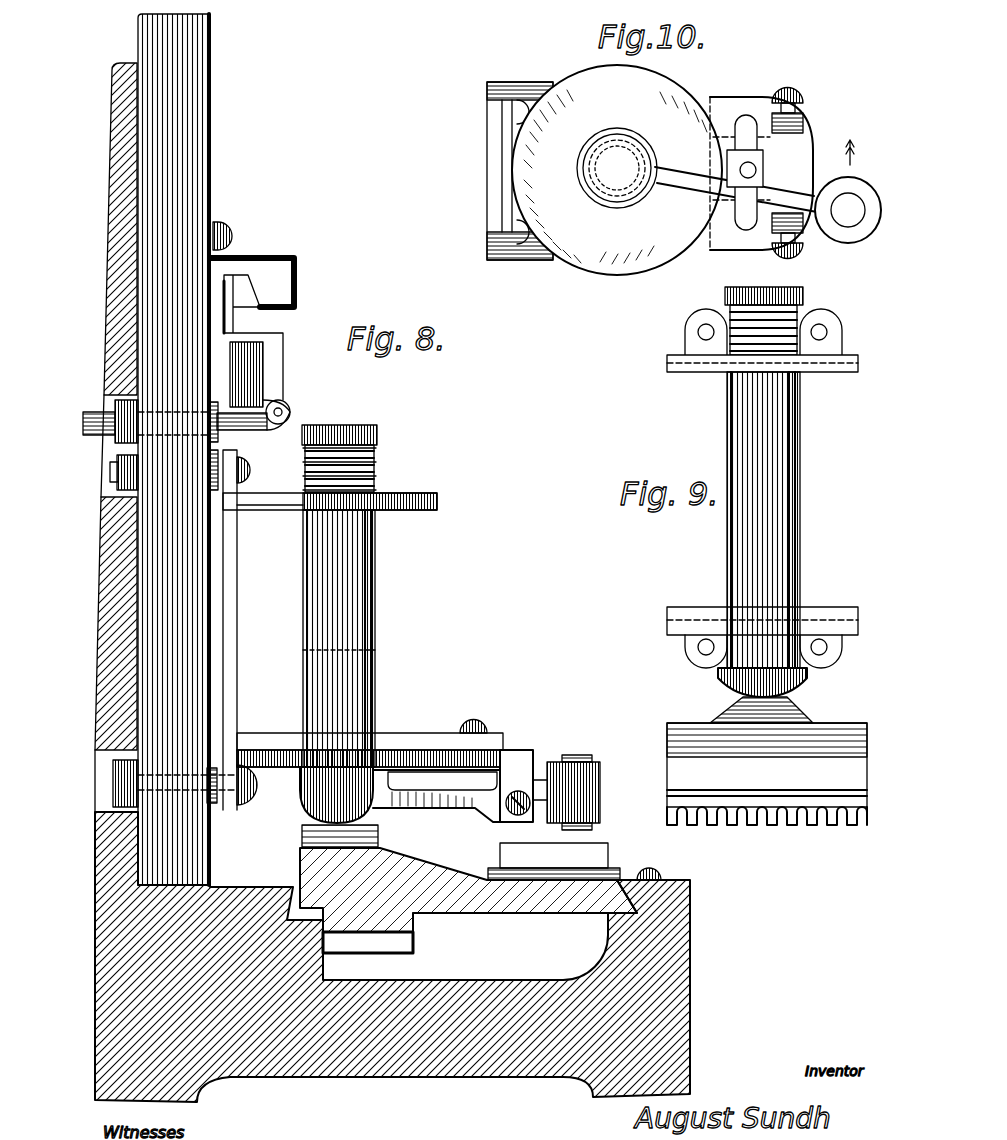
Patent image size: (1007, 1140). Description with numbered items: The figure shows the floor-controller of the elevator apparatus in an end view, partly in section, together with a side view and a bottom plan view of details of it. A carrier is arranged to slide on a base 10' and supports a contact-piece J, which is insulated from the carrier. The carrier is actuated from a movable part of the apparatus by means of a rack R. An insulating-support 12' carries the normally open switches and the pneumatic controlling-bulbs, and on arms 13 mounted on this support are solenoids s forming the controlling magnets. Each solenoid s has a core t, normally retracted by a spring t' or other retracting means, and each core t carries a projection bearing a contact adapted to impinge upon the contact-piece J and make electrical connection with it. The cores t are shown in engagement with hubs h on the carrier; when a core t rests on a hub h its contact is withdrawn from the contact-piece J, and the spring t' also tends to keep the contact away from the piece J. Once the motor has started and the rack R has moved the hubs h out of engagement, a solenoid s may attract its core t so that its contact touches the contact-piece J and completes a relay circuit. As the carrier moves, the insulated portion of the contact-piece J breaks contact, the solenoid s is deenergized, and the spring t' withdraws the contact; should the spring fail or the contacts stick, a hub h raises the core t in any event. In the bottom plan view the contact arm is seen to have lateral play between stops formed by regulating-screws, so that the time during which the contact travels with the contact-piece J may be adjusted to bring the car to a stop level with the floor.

In FIG. 8, the insulating-support 12' is at (201, 449).
In FIG. 8, the core t is at (338, 609).
In FIG. 9, the core t is at (767, 492).
In FIG. 10, the core t is at (617, 170).
In FIG. 8, the retracting spring t' is at (354, 469).
In FIG. 9, the retracting spring t' is at (739, 319).
In FIG. 8, the arm 13 is at (281, 507).
In FIG. 9, the arm 13 is at (849, 374).
In FIG. 10, the arm 13 is at (535, 90).
In FIG. 8, the solenoid s is at (375, 636).
In FIG. 9, the solenoid s is at (803, 492).
In FIG. 8, the hub h is at (380, 836).
In FIG. 9, the hub h is at (800, 714).
In FIG. 8, the base 10' is at (392, 957).
In FIG. 8, the contact-piece J is at (554, 856).
In FIG. 8, the rack R is at (415, 946).
In FIG. 9, the rack R is at (800, 826).